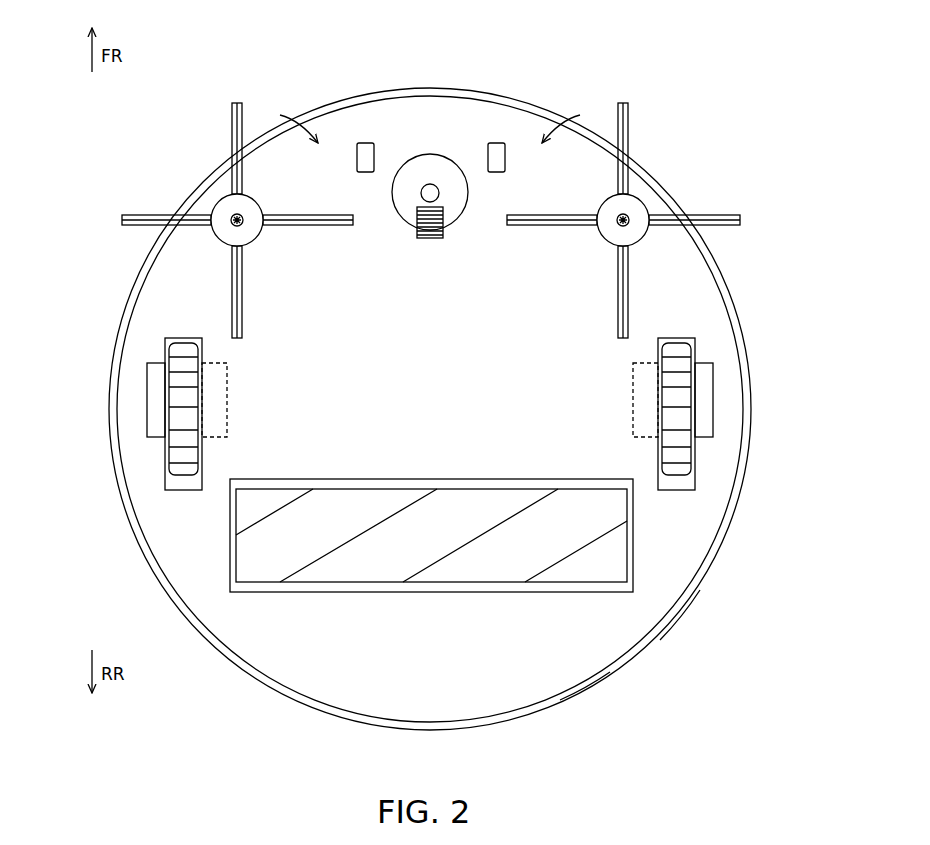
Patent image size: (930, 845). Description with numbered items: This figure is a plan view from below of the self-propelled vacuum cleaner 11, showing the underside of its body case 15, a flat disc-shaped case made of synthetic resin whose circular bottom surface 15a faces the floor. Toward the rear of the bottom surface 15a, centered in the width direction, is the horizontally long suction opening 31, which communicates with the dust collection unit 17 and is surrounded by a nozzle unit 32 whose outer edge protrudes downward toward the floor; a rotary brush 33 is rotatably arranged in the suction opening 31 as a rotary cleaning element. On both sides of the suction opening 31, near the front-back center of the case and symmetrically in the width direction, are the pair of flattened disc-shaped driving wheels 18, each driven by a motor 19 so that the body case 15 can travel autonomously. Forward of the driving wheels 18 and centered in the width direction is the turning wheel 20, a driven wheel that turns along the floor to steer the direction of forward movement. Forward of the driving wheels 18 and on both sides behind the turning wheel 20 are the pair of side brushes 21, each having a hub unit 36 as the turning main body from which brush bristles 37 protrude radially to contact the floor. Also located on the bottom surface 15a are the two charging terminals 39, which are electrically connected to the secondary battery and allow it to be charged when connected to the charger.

The vacuum cleaner 11 is at (353, 56).
The body case 15 is at (727, 280).
The bottom surface 15a is at (683, 590).
The dust collection unit 17 is at (581, 674).
The driving wheel 18 is at (178, 395).
The motor 19 is at (227, 400).
The turning wheel 20 is at (430, 240).
The side brush 21 is at (150, 158).
The suction opening 31 is at (466, 488).
The nozzle unit 32 is at (400, 484).
The rotary brush 33 is at (537, 513).
The hub unit 36 is at (232, 200).
The brush bristles 37 is at (231, 112).
The charging terminal 39 is at (365, 142).